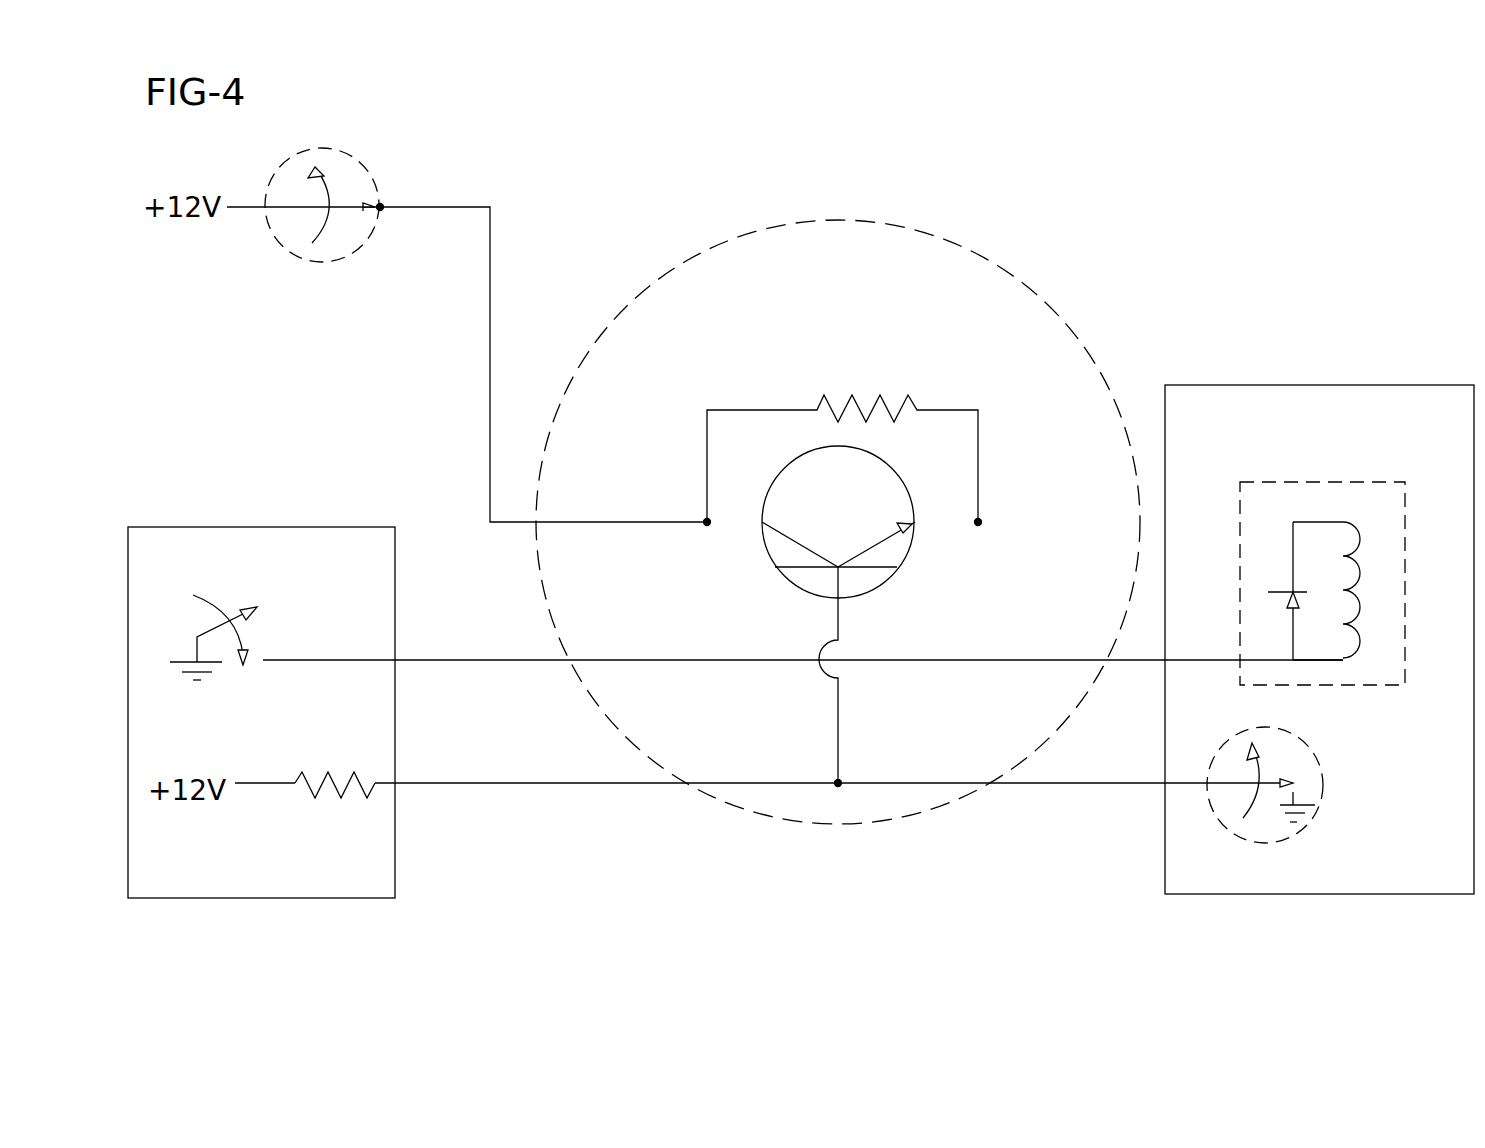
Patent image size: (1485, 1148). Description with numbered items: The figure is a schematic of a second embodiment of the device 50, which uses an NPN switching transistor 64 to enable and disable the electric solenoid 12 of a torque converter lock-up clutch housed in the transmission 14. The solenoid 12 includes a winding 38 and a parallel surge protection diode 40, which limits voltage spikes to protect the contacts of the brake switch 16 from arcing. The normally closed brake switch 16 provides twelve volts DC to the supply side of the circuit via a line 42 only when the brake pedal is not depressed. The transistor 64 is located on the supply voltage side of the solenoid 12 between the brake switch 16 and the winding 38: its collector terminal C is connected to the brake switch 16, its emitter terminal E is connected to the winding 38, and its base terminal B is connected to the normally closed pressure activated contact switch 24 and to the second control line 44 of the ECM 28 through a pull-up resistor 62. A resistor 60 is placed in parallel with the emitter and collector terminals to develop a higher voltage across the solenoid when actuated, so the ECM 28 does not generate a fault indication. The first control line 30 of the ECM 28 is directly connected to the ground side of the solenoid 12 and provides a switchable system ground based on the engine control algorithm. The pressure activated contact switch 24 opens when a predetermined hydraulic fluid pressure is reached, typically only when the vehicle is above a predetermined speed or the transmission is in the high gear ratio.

The electric solenoid 12 is at (1312, 480).
The transmission 14 is at (1200, 385).
The brake switch 16 is at (367, 163).
The pressure activated contact switch 24 is at (1318, 762).
The ECM 28 is at (368, 525).
The first control line 30 is at (460, 658).
The winding 38 is at (1350, 590).
The surge protection diode 40 is at (1275, 600).
The line 42 is at (453, 207).
The second control line 44 is at (458, 782).
The device 50 is at (1020, 265).
The resistor 60 is at (877, 403).
The pull-up resistor 62 is at (343, 788).
The NPN switching transistor 64 is at (767, 555).